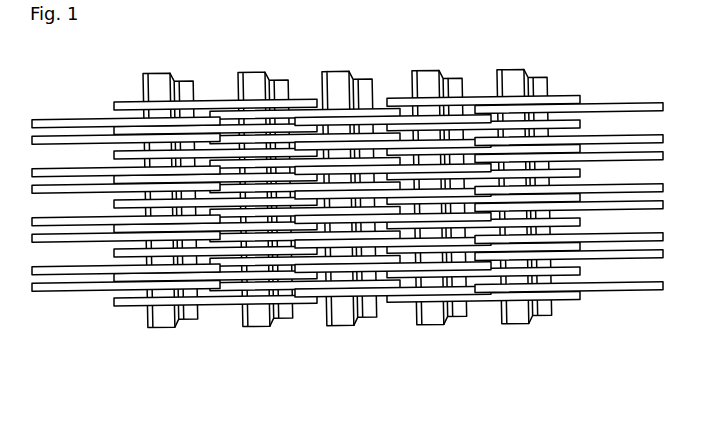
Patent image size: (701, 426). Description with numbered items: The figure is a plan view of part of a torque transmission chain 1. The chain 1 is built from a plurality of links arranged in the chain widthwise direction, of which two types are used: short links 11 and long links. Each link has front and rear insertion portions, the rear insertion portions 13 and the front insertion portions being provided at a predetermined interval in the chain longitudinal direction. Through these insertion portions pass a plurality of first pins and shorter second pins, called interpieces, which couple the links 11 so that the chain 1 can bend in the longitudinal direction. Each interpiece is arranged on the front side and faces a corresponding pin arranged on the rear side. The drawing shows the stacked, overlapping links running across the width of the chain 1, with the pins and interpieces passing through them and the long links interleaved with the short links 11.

The torque transmission chain 1 is at (565, 68).
The short link 11 is at (348, 248).
The rear insertion portion 13 is at (198, 308).